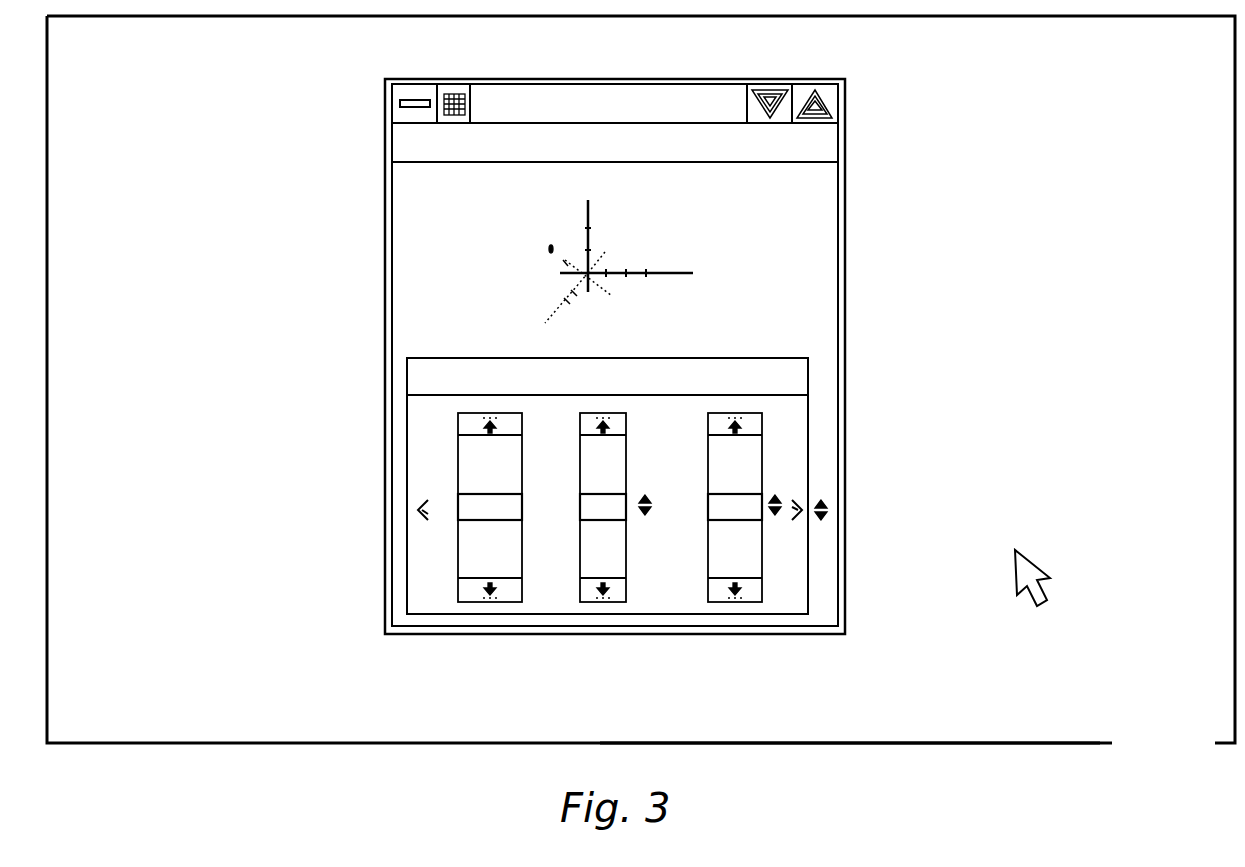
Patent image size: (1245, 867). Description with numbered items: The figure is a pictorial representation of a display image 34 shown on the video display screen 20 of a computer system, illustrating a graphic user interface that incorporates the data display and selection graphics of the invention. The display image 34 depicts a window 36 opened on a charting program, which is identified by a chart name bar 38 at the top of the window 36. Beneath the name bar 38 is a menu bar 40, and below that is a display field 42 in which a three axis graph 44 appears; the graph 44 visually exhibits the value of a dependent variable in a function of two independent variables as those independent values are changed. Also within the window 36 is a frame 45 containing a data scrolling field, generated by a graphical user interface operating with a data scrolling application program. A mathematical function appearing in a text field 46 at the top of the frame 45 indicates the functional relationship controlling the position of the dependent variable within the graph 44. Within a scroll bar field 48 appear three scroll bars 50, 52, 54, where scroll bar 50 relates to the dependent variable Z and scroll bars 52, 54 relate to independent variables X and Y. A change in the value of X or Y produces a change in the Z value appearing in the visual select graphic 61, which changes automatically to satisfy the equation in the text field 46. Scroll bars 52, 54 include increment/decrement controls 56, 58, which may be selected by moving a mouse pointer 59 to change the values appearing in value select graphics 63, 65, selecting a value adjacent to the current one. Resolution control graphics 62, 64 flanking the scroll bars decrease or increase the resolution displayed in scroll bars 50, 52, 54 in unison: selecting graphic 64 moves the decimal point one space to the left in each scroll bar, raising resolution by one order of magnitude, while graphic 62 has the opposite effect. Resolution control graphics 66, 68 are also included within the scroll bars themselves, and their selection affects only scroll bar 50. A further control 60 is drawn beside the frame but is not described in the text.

The video display screen 20 is at (1040, 745).
The display image 34 is at (935, 732).
The window 36 is at (845, 195).
The chart name bar 38 is at (675, 98).
The menu bar 40 is at (828, 145).
The display field 42 is at (722, 250).
The three axis graph 44 is at (614, 298).
The frame 45 is at (810, 430).
The text field 46 is at (495, 378).
The scroll bar field 48 is at (430, 507).
The scroll bar 50 is at (502, 603).
The scroll bar 52 is at (593, 542).
The scroll bar 54 is at (708, 542).
The increment/decrement control 56 is at (645, 492).
The increment/decrement control 58 is at (775, 492).
The mouse pointer 59 is at (1055, 587).
The right spinner control 60 is at (821, 522).
The visual select graphic 61 is at (535, 500).
The resolution control graphic 62 is at (420, 525).
The value select graphic 63 is at (626, 520).
The resolution control graphic 64 is at (805, 495).
The value select graphic 65 is at (708, 515).
The resolution control graphic 66 is at (462, 506).
The resolution control graphic 68 is at (520, 508).